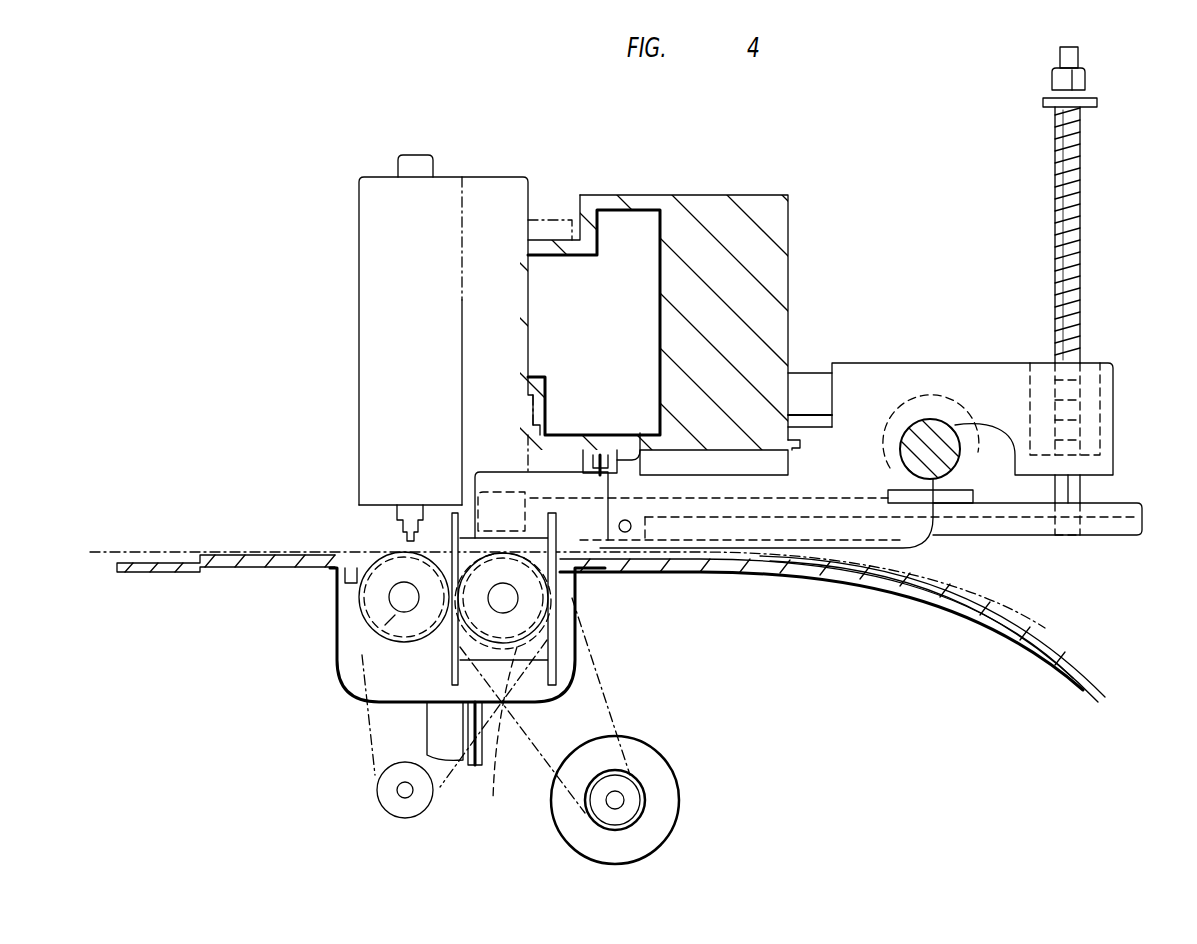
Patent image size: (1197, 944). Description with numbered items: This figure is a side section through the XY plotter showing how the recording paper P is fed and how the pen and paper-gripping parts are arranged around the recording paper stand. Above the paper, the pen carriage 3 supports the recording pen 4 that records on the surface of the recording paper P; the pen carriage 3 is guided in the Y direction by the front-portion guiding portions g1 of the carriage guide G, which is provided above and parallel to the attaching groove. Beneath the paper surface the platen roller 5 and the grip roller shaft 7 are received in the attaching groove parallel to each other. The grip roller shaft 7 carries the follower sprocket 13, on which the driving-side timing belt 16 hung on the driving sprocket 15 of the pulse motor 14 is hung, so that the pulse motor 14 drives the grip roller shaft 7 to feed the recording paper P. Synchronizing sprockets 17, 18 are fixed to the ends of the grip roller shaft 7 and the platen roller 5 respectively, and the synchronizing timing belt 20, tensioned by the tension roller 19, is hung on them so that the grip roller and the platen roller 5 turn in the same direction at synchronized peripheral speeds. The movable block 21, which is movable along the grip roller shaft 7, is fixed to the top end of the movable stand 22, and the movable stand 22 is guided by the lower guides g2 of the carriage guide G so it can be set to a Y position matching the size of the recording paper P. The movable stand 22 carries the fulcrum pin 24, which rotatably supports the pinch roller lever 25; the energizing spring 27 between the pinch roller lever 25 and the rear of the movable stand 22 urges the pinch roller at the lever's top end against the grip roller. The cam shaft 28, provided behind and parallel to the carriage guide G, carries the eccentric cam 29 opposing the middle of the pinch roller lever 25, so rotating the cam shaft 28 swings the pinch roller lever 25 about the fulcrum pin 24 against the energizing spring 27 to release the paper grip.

The pen carriage 3 is at (358, 318).
The recording pen 4 is at (405, 155).
The carriage guide G is at (738, 225).
The front-portion guiding portions g1 is at (545, 232).
The lower guides g2 is at (818, 462).
The movable stand 22 is at (885, 370).
The cam shaft 28 is at (935, 425).
The eccentric cam 29 is at (968, 400).
The energizing spring 27 is at (1080, 240).
The pinch roller lever 25 is at (1020, 525).
The fulcrum pin 24 is at (632, 526).
The recording paper P is at (237, 552).
The synchronizing timing belt 20 is at (370, 735).
The movable block 21 is at (455, 513).
The platen roller 5 is at (375, 600).
The synchronizing sprocket 18 is at (390, 630).
The follower sprocket 13 is at (575, 615).
The grip roller shaft 7 is at (515, 598).
The tension roller 19 is at (392, 800).
The synchronizing sprocket 17 is at (500, 743).
The driving-side timing belt 16 is at (625, 733).
The pulse motor 14 is at (655, 830).
The driving sprocket 15 is at (597, 820).